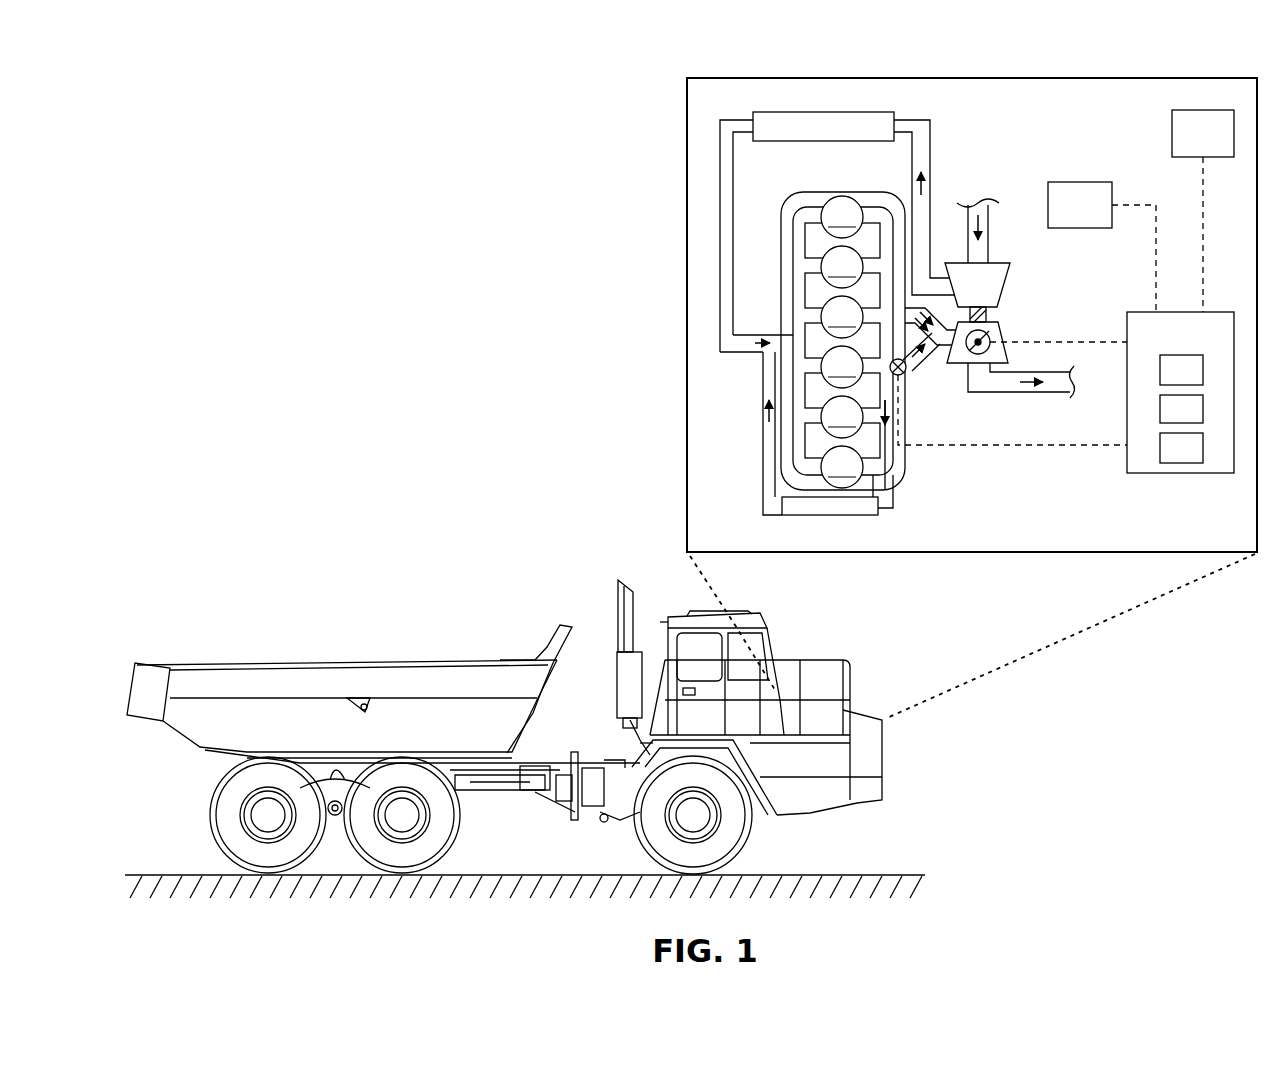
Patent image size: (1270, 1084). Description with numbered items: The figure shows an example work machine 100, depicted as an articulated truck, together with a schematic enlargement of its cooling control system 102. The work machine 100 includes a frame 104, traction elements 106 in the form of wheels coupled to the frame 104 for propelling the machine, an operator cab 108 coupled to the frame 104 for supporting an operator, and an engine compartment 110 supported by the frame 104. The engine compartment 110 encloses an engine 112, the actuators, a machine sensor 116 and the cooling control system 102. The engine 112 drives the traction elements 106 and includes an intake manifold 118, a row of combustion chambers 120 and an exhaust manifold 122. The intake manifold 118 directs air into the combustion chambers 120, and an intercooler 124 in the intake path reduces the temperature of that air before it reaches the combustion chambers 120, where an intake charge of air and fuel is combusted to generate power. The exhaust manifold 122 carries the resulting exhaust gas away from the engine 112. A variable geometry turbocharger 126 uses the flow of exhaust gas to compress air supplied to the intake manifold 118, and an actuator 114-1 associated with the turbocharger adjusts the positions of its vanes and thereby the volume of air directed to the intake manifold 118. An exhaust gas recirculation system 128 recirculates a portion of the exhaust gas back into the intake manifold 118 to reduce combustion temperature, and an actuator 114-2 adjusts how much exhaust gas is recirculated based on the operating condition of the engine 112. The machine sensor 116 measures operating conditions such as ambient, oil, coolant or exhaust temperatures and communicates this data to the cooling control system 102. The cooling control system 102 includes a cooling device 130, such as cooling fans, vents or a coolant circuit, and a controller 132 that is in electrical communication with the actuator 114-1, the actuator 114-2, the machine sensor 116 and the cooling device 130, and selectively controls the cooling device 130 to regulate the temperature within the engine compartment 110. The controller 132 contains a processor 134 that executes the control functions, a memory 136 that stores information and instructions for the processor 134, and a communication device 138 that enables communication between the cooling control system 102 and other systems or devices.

The work machine 100 is at (166, 84).
The cooling control system 102 is at (687, 90).
The frame 104 is at (472, 788).
The traction elements 106 is at (218, 842).
The operator cab 108 is at (685, 612).
The engine compartment 110 is at (880, 757).
The engine 112 is at (807, 192).
The actuator 114-1 is at (985, 334).
The actuator 114-2 is at (908, 376).
The machine sensor 116 is at (1203, 211).
The intake manifold 118 is at (802, 240).
The combustion chambers 120 is at (842, 342).
The exhaust manifold 122 is at (872, 210).
The intercooler 124 is at (823, 126).
The variable geometry turbocharger 126 is at (1020, 283).
The exhaust gas recirculation system 128 is at (908, 502).
The cooling device 130 is at (1102, 247).
The controller 132 is at (1180, 392).
The processor 134 is at (1181, 370).
The memory 136 is at (1181, 409).
The communication device 138 is at (1181, 448).